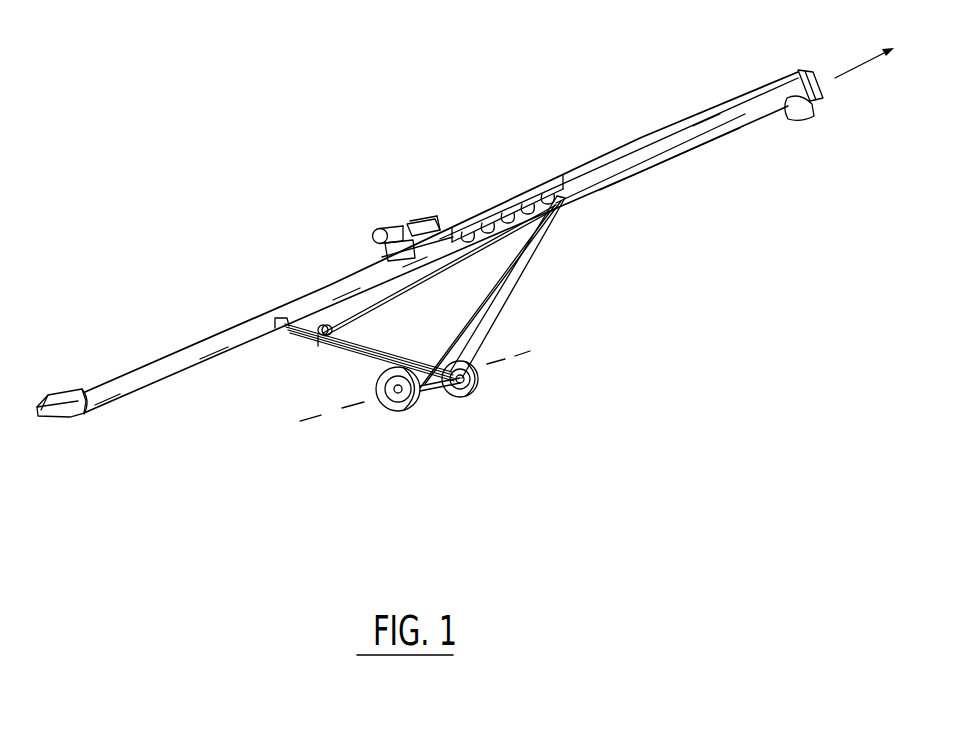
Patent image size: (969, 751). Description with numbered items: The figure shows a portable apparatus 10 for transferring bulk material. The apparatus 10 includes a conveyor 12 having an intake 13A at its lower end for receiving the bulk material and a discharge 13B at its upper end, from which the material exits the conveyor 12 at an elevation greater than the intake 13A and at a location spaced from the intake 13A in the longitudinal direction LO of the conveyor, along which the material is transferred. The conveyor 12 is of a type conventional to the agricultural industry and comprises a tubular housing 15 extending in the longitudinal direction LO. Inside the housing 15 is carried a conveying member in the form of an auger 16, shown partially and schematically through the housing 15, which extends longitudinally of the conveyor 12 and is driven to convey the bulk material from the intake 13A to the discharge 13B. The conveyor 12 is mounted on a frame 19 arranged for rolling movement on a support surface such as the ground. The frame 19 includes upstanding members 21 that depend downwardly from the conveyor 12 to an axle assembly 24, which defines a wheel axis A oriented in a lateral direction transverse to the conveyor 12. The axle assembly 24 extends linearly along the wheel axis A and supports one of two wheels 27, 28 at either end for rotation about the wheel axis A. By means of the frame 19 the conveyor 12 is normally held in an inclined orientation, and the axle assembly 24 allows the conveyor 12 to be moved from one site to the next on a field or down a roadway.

The apparatus 10 is at (555, 152).
The conveyor 12 is at (665, 155).
The intake 13A is at (63, 388).
The discharge 13B is at (803, 125).
The tubular housing 15 is at (702, 150).
The auger 16 is at (468, 222).
The frame 19 is at (306, 361).
The upstanding members 21 is at (517, 302).
The axle assembly 24 is at (440, 392).
The wheel 27 is at (383, 398).
The wheel 28 is at (487, 366).
The wheel axis A is at (323, 415).
The longitudinal direction LO is at (868, 53).